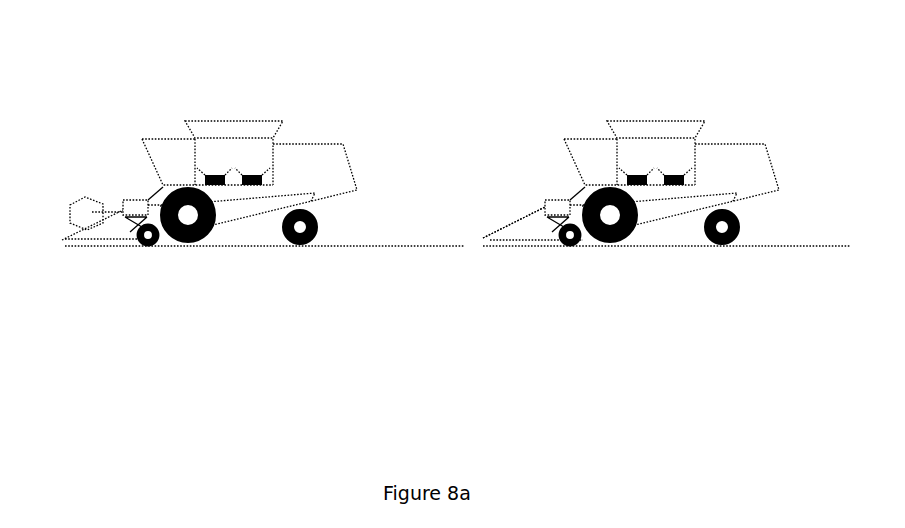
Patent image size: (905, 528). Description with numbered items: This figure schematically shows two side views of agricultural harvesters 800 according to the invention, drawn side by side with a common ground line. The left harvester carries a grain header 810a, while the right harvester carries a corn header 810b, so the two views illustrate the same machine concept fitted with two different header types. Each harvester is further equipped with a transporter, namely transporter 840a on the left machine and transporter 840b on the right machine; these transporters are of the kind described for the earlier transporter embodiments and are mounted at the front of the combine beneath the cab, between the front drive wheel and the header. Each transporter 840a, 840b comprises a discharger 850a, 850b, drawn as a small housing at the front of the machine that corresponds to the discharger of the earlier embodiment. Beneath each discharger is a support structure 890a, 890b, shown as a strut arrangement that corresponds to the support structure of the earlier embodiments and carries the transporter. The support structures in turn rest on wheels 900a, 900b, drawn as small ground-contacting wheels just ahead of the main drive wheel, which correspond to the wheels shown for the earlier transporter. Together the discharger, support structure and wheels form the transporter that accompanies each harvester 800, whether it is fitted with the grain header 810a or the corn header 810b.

The harvesters 800 is at (538, 57).
The transporter 840a is at (121, 171).
The transporter 840b is at (537, 160).
The discharger 850a is at (125, 200).
The discharger 850b is at (547, 203).
The support structure 890a is at (135, 218).
The support structure 890b is at (545, 223).
The wheels 900a is at (152, 240).
The wheels 900b is at (573, 240).
The grain header 810a is at (97, 223).
The corn header 810b is at (530, 227).